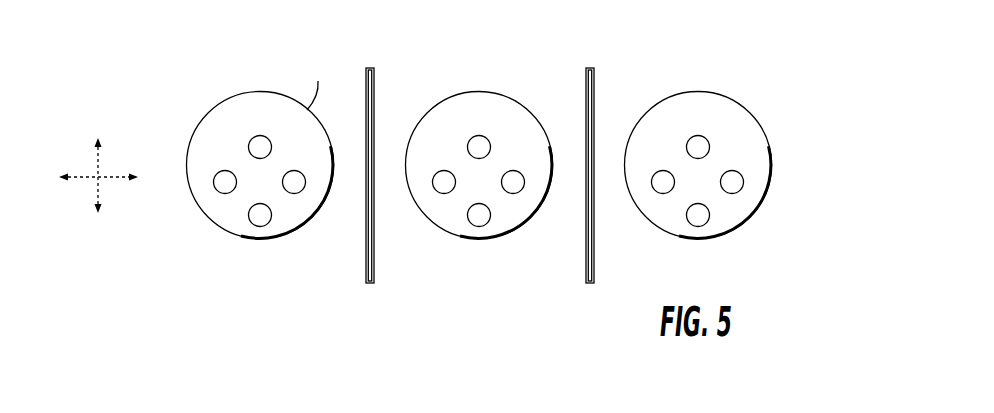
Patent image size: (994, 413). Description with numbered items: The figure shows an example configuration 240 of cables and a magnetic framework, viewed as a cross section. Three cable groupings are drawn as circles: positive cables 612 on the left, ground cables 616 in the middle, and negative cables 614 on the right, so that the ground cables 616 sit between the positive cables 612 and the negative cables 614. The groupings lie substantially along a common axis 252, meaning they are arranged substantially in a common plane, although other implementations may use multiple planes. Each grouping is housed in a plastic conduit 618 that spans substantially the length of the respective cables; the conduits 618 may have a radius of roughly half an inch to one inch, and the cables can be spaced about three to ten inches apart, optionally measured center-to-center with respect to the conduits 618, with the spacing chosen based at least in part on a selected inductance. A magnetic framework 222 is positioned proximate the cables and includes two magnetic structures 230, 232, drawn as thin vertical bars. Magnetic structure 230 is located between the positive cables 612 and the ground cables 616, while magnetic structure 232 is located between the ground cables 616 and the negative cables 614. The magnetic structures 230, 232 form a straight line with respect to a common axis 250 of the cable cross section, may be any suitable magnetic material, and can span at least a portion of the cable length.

The magnetic framework 222 is at (655, 46).
The configuration 240 is at (794, 80).
The positive cables 612 is at (244, 192).
The negative cables 614 is at (682, 192).
The ground cables 616 is at (463, 192).
The plastic conduit 618 is at (758, 81).
The magnetic structure 230 is at (370, 284).
The magnetic structure 232 is at (590, 284).
The common axis 250 is at (93, 163).
The common axis 252 is at (107, 180).